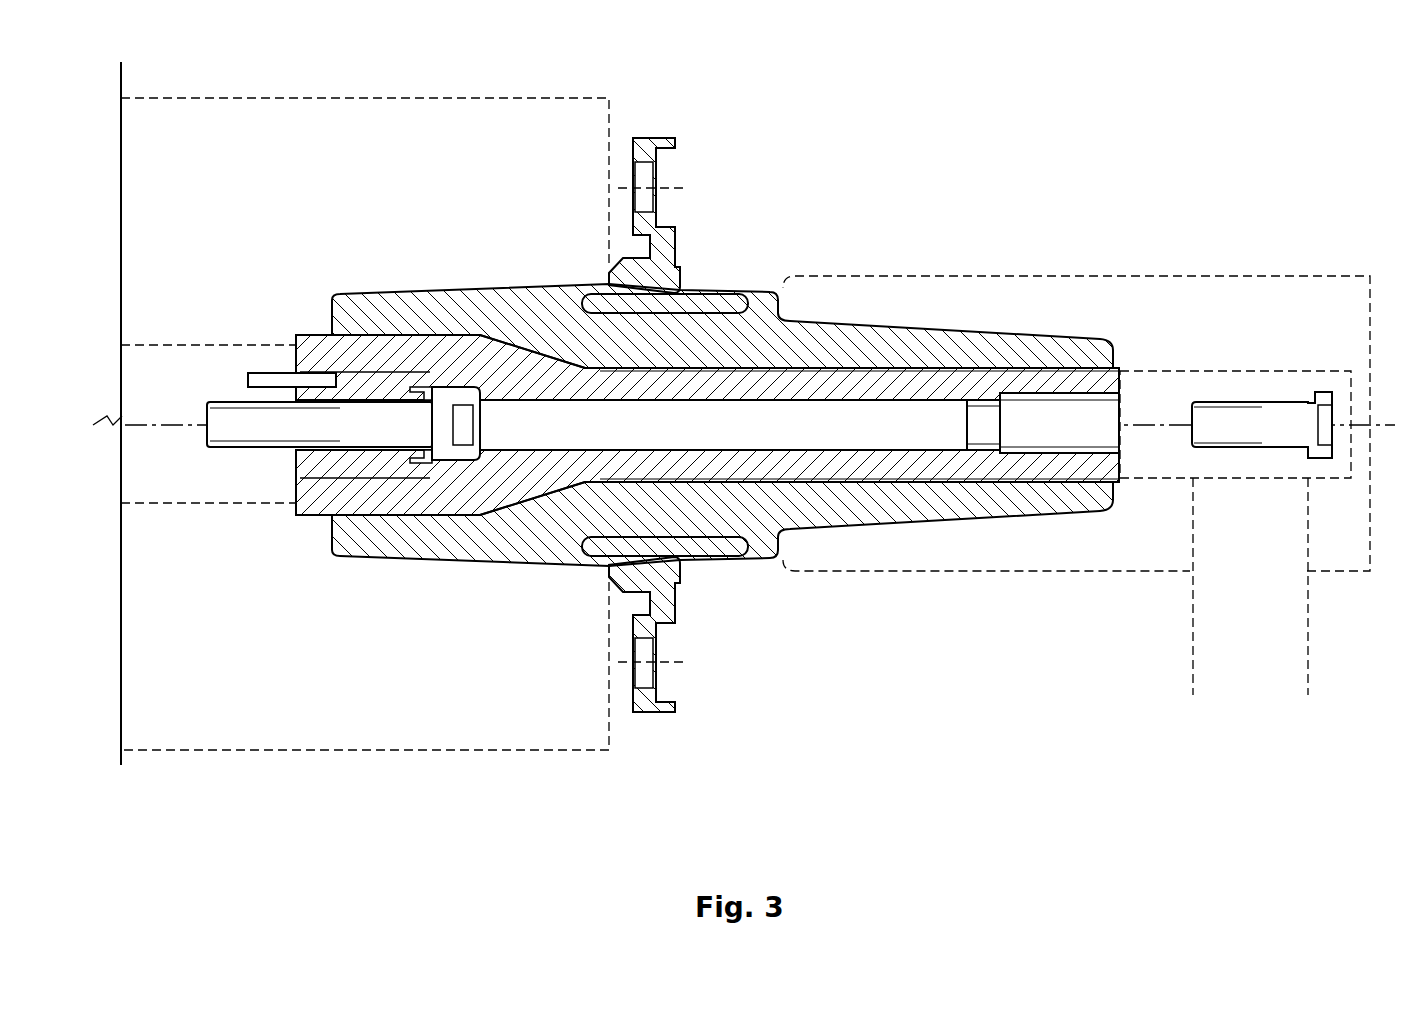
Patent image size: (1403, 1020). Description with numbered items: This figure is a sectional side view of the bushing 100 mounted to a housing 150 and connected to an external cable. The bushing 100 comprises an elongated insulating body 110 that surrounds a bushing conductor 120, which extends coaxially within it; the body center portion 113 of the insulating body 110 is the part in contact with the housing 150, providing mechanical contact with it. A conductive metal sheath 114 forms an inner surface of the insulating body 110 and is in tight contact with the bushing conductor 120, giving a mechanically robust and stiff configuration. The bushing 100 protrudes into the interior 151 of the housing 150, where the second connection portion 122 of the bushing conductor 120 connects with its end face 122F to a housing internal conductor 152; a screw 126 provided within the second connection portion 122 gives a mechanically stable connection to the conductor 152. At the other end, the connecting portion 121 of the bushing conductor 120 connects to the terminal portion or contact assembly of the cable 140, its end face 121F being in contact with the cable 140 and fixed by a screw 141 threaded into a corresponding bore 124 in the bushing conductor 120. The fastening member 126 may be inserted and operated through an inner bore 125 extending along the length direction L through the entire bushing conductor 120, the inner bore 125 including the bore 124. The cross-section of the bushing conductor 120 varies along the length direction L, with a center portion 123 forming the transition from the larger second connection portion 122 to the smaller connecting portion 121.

The bushing 100 is at (1230, 44).
The insulating body 110 is at (803, 528).
The body center portion 113 is at (760, 772).
The metal sheath 114 is at (405, 336).
The bushing conductor 120 is at (838, 364).
The connecting portion 121 is at (1103, 772).
The end face 121F is at (1121, 382).
The second connection portion 122 is at (470, 772).
The end face 122F is at (296, 366).
The center portion 123 is at (640, 390).
The threaded bore 124 is at (1037, 412).
The inner bore 125 is at (735, 414).
The screw 126 is at (433, 458).
The external cable or contact assembly 140 is at (1360, 576).
The screw 141 is at (1316, 402).
The housing 150 is at (541, 97).
The interior 151 is at (325, 199).
The housing internal conductor 152 is at (190, 343).
The length direction L is at (910, 432).